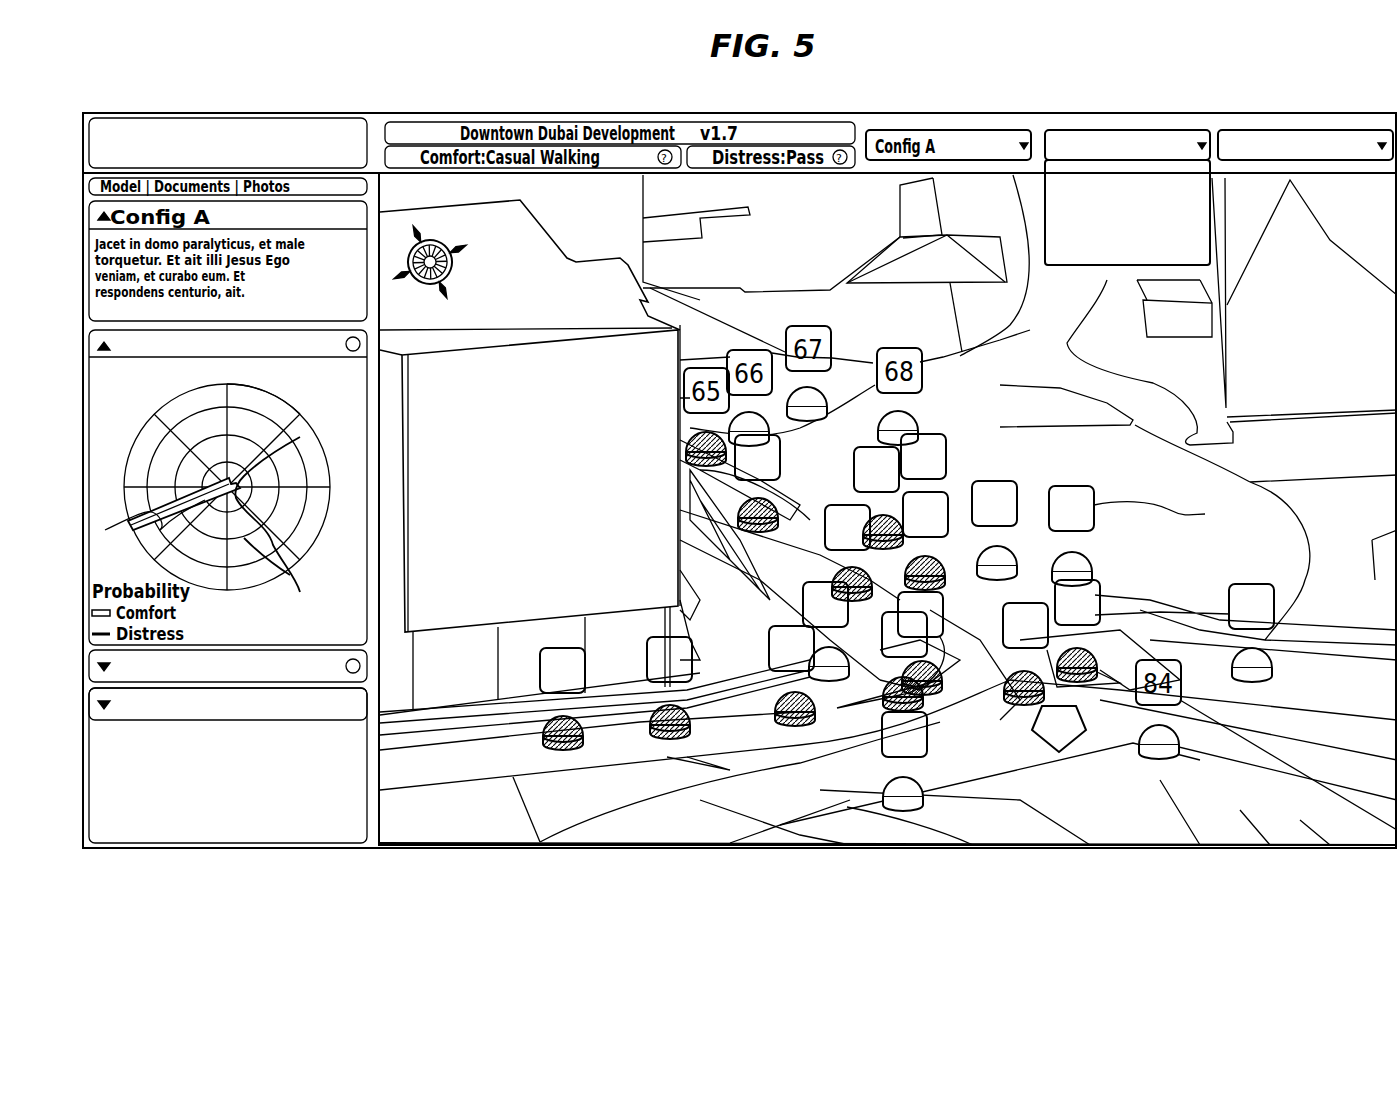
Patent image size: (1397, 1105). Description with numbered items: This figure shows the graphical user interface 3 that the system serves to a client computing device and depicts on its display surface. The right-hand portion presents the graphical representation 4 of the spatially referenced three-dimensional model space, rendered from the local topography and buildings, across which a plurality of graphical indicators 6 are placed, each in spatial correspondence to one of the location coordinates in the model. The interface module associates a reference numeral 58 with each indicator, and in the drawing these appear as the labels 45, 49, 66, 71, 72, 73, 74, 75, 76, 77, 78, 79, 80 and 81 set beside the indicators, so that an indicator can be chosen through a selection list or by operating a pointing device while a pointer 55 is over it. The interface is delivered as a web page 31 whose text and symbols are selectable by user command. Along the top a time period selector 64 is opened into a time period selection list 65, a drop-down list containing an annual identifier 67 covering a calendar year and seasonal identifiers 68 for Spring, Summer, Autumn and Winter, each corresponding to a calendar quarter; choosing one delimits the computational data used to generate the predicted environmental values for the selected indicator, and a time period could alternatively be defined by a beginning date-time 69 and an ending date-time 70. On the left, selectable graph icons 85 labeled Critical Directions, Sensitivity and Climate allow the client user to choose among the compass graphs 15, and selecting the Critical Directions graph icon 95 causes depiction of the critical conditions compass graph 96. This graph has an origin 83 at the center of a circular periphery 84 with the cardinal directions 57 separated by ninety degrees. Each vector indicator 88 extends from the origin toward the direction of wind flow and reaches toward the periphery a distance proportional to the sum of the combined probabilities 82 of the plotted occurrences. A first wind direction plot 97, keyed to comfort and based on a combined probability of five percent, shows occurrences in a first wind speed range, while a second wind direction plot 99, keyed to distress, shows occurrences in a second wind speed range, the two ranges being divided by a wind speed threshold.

The graphical user interface 3 is at (1303, 110).
The graphical representation 4 is at (1313, 452).
The graphical indicators 6 is at (1250, 658).
The compass graphs 15 is at (185, 487).
The web page 31 is at (1216, 126).
The point label 45 is at (1071, 508).
The point label 49 is at (904, 734).
The pointer 55 is at (1059, 729).
The cardinal directions 57 is at (236, 607).
The reference numerals 58 is at (1250, 584).
The time period selector 64 is at (1127, 109).
The time period selection list 65 is at (1086, 165).
The season options 66 is at (1132, 216).
The annual identifier 67 is at (1095, 142).
The seasonal identifiers 68 is at (1095, 180).
The beginning date-time 69 is at (757, 457).
The ending date-time 70 is at (876, 469).
The point label 71 is at (923, 456).
The point label 72 is at (847, 527).
The point label 73 is at (925, 514).
The point label 74 is at (994, 503).
The point label 75 is at (825, 604).
The point label 76 is at (920, 614).
The point label 77 is at (1077, 602).
The point label 78 is at (562, 670).
The point label 79 is at (669, 659).
The point label 80 is at (791, 648).
The point label 81 is at (904, 634).
The combined probability 82 is at (1025, 625).
The origin 83 is at (300, 437).
The circular periphery 84 is at (270, 390).
The selectable graph icons 85 is at (92, 705).
The vector indicator 88 is at (160, 515).
The Critical Directions graph icon 95 is at (95, 332).
The critical conditions compass graph 96 is at (125, 408).
The first wind direction plot 97 is at (288, 572).
The second wind direction plot 99 is at (152, 540).